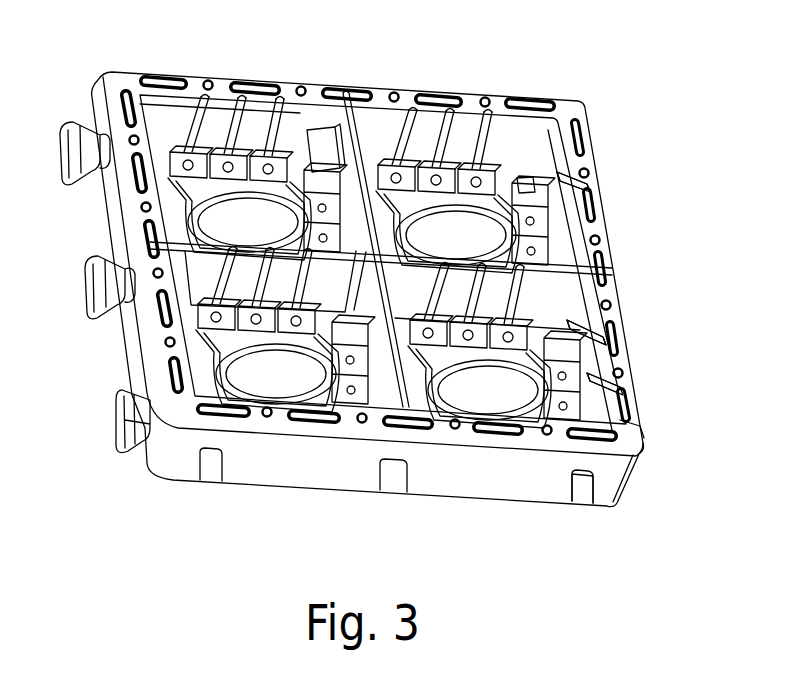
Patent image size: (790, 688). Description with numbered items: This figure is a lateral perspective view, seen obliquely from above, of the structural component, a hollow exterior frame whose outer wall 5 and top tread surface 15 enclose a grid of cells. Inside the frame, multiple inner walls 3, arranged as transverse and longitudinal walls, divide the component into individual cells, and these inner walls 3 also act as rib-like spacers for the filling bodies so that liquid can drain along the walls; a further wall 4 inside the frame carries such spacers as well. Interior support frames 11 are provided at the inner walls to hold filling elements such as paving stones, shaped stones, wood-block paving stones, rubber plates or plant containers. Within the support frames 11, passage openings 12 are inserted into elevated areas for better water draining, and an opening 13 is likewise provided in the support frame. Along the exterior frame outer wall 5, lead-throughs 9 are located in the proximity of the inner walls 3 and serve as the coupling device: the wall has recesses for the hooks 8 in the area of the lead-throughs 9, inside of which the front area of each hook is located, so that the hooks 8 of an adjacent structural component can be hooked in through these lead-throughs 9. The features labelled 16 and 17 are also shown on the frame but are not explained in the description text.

The inner walls 3 is at (223, 86).
The wall 4 is at (381, 92).
The exterior frame outer wall 5 is at (465, 478).
The hooks 8 is at (115, 433).
The lead-throughs 9 is at (578, 507).
The interior support frames 11 is at (320, 408).
The passage openings 12 is at (627, 341).
The opening 13 is at (592, 188).
The tread surface 15 is at (640, 426).
The opening 16 is at (633, 388).
The slot 17 is at (551, 100).